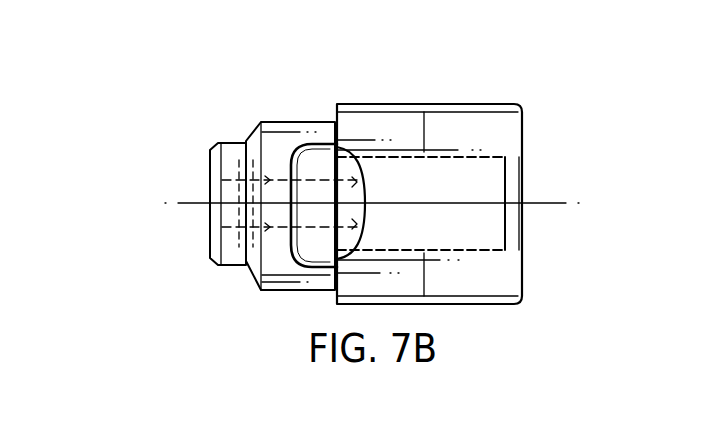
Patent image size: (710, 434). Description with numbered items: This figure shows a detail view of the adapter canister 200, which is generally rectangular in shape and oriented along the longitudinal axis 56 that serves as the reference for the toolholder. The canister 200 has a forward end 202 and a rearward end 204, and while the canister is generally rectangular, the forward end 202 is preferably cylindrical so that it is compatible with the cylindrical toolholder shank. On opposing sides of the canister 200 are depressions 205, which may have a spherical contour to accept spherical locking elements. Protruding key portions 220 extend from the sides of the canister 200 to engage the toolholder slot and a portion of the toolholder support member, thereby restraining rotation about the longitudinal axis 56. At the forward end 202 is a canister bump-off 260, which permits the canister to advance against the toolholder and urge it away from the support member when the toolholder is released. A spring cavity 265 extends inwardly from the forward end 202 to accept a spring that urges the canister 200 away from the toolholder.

The adapter canister 200 is at (406, 88).
The protruding key portions 220 is at (487, 104).
The rearward end 204 is at (523, 172).
The depressions 205 is at (313, 163).
The spring cavity 265 is at (220, 228).
The forward end 202 is at (210, 177).
The canister bump-off 260 is at (210, 242).
The longitudinal axis 56 is at (557, 200).